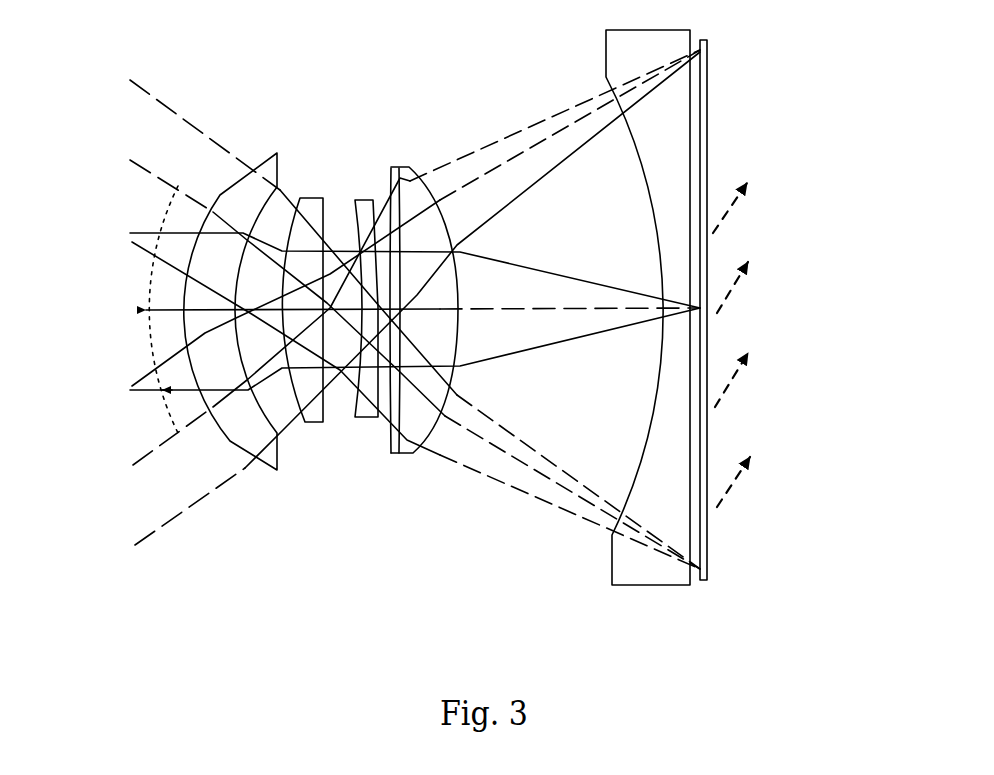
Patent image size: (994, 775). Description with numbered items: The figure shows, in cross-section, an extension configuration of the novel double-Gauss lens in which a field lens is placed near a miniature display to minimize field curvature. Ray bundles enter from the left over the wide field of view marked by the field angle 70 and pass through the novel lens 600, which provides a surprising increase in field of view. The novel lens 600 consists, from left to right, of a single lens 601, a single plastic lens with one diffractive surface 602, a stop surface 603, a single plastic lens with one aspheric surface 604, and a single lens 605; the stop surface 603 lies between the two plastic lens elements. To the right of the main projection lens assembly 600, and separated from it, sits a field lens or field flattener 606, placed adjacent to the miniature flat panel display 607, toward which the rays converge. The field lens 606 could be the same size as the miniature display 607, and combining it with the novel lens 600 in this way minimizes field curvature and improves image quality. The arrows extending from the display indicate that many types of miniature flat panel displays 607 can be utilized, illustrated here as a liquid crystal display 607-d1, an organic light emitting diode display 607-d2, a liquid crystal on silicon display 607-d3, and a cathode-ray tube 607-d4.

The field angle of 70 degrees 70 is at (135, 309).
The novel lens 600 is at (331, 375).
The single lens 601 is at (265, 483).
The single plastic lens with one diffractive surface 602 is at (312, 191).
The stop surface 603 is at (343, 400).
The single plastic lens with one aspheric surface 604 is at (370, 425).
The single lens 605 is at (434, 356).
The field lens 606 is at (607, 568).
The miniature flat panel display 607 is at (705, 127).
The liquid crystal display (LCD) 607-d1 is at (787, 190).
The organic light emitting diode (OLED) display 607-d2 is at (789, 269).
The liquid crystal on silicon (LCOS) display 607-d3 is at (788, 362).
The cathode-ray tube (CRT) 607-d4 is at (789, 463).